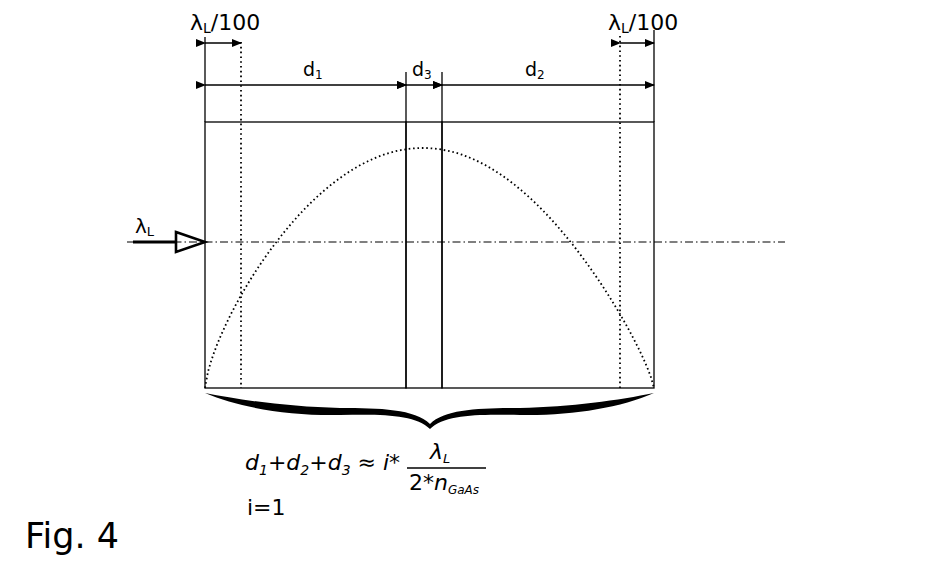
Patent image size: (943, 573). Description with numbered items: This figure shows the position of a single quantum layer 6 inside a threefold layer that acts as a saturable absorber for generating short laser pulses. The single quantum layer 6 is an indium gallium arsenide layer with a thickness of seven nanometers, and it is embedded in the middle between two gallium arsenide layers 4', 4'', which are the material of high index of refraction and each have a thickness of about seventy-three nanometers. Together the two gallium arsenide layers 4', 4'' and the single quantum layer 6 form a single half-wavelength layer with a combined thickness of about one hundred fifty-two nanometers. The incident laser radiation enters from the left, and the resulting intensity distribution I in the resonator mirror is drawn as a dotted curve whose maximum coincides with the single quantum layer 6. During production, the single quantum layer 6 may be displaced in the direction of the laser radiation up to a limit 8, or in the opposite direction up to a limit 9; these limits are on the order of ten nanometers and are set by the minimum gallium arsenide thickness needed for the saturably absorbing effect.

The gallium arsenide layer 4' is at (288, 307).
The gallium arsenide layer 4'' is at (548, 307).
The single quantum layer 6 is at (432, 365).
The limit 8 is at (620, 217).
The limit 9 is at (241, 228).
The intensity distribution I is at (602, 288).